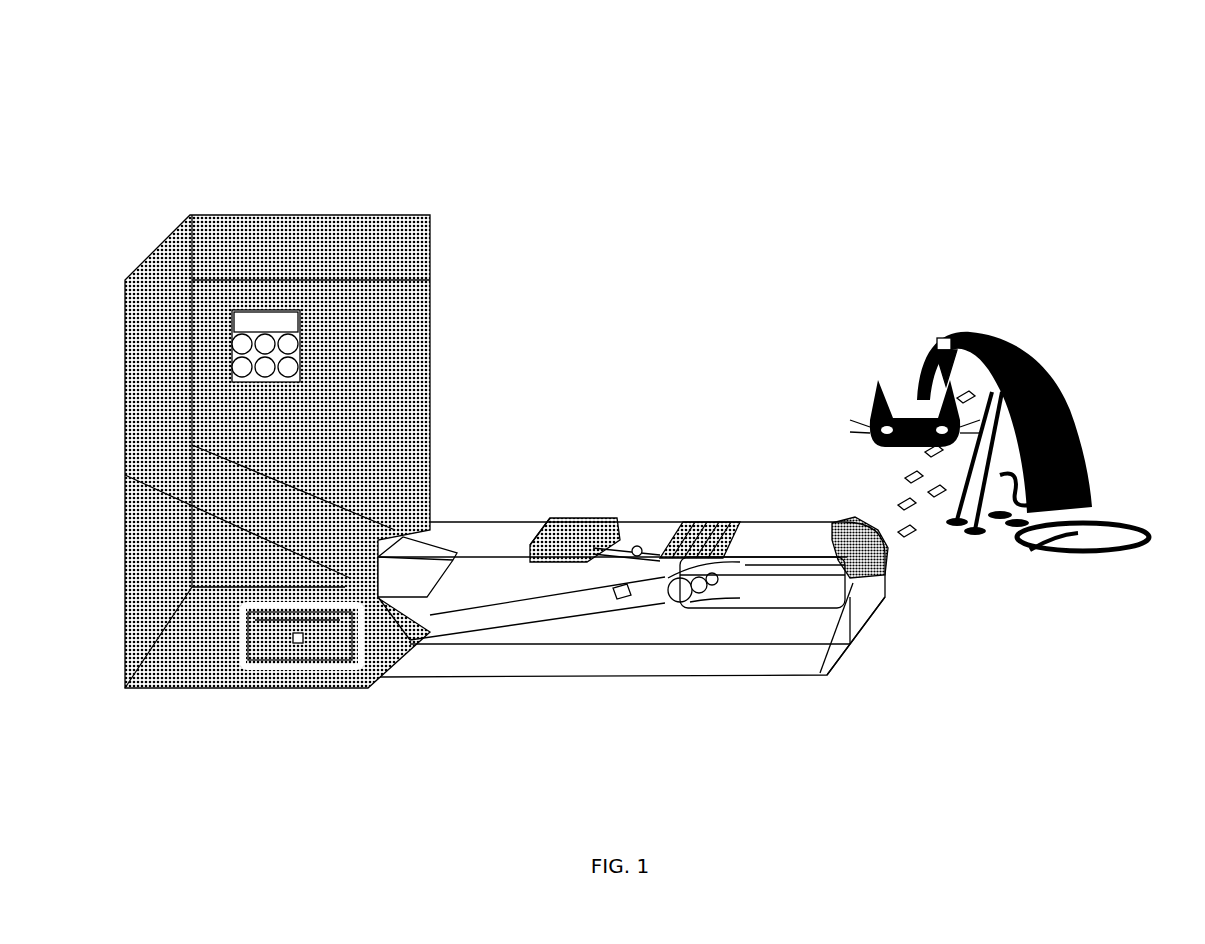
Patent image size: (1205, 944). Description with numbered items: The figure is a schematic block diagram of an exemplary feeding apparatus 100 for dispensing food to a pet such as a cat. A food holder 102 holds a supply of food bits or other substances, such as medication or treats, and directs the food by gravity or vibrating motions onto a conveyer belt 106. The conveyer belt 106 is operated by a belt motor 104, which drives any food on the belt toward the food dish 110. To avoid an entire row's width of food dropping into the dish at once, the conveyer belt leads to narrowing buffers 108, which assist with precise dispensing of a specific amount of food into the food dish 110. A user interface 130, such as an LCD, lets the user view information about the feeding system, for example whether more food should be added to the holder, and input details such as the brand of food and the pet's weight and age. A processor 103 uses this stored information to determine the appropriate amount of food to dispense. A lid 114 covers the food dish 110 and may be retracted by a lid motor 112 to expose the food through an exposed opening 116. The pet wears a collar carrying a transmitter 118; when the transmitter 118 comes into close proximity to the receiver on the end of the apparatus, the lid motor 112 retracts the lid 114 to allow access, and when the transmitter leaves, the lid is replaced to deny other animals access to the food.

The feeding apparatus 100 is at (853, 162).
The food holder 102 is at (907, 593).
The processor 103 is at (290, 644).
The belt motor 104 is at (300, 662).
The conveyer belt 106 is at (487, 630).
The narrowing buffers 108 is at (663, 594).
The food dish 110 is at (785, 612).
The lid motor 112 is at (560, 521).
The lid 114 is at (686, 521).
The exposed opening 116 is at (754, 562).
The transmitter 118 is at (936, 350).
The user interface 130 is at (305, 361).